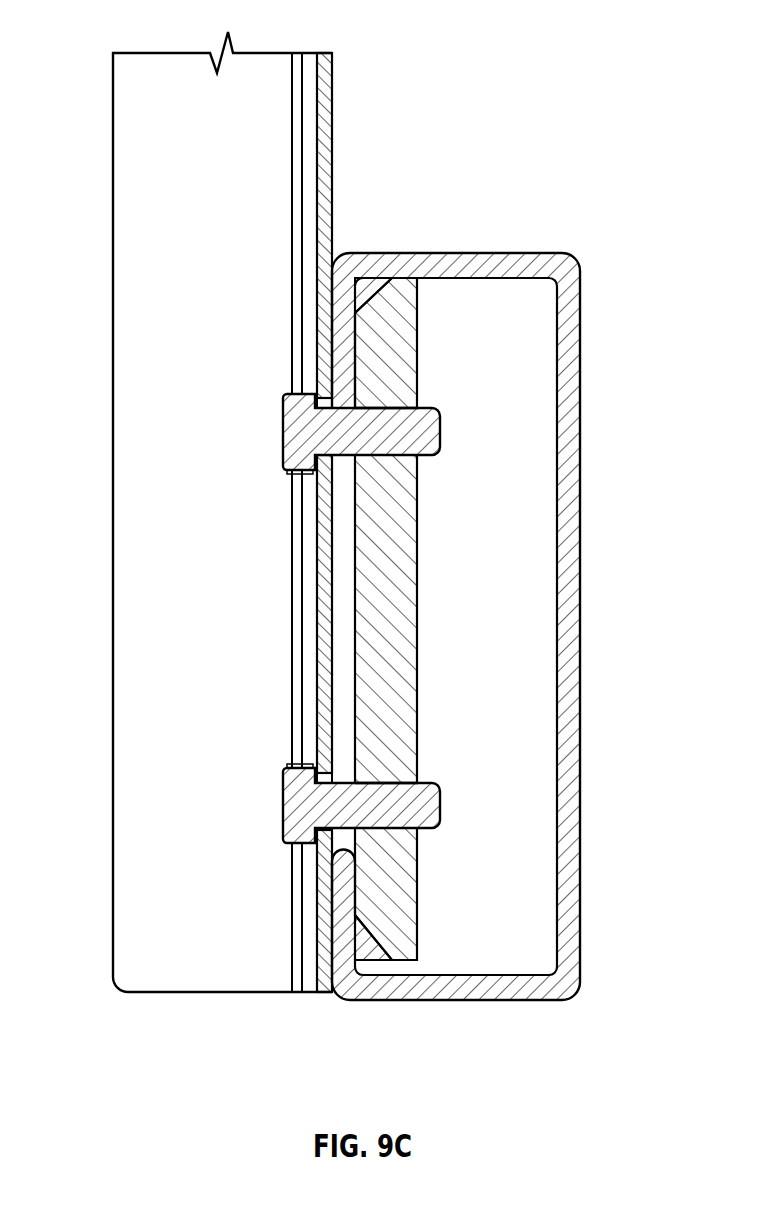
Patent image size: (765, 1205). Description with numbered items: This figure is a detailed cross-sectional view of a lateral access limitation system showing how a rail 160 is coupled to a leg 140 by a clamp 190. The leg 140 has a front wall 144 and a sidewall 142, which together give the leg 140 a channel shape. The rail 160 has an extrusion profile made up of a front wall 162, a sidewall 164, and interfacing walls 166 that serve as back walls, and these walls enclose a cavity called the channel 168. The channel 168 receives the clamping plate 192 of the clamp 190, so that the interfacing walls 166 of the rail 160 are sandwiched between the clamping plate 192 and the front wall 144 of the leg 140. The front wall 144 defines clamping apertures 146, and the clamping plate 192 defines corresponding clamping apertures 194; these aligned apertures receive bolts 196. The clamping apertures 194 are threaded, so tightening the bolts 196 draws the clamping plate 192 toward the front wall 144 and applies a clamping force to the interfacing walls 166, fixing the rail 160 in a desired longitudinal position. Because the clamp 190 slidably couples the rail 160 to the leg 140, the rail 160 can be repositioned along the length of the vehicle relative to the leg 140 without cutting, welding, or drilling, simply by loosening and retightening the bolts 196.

The leg 140 is at (117, 40).
The sidewall 142 is at (135, 118).
The front wall 144 is at (332, 127).
The clamping aperture 146 is at (325, 396).
The rail 160 is at (590, 667).
The front wall 162 is at (570, 884).
The sidewall 164 is at (522, 993).
The interfacing wall 166 is at (321, 963).
The channel 168 is at (537, 944).
The clamp 190 is at (456, 508).
The clamping plate 192 is at (406, 630).
The clamping aperture 194 is at (388, 401).
The bolt 196 is at (432, 434).